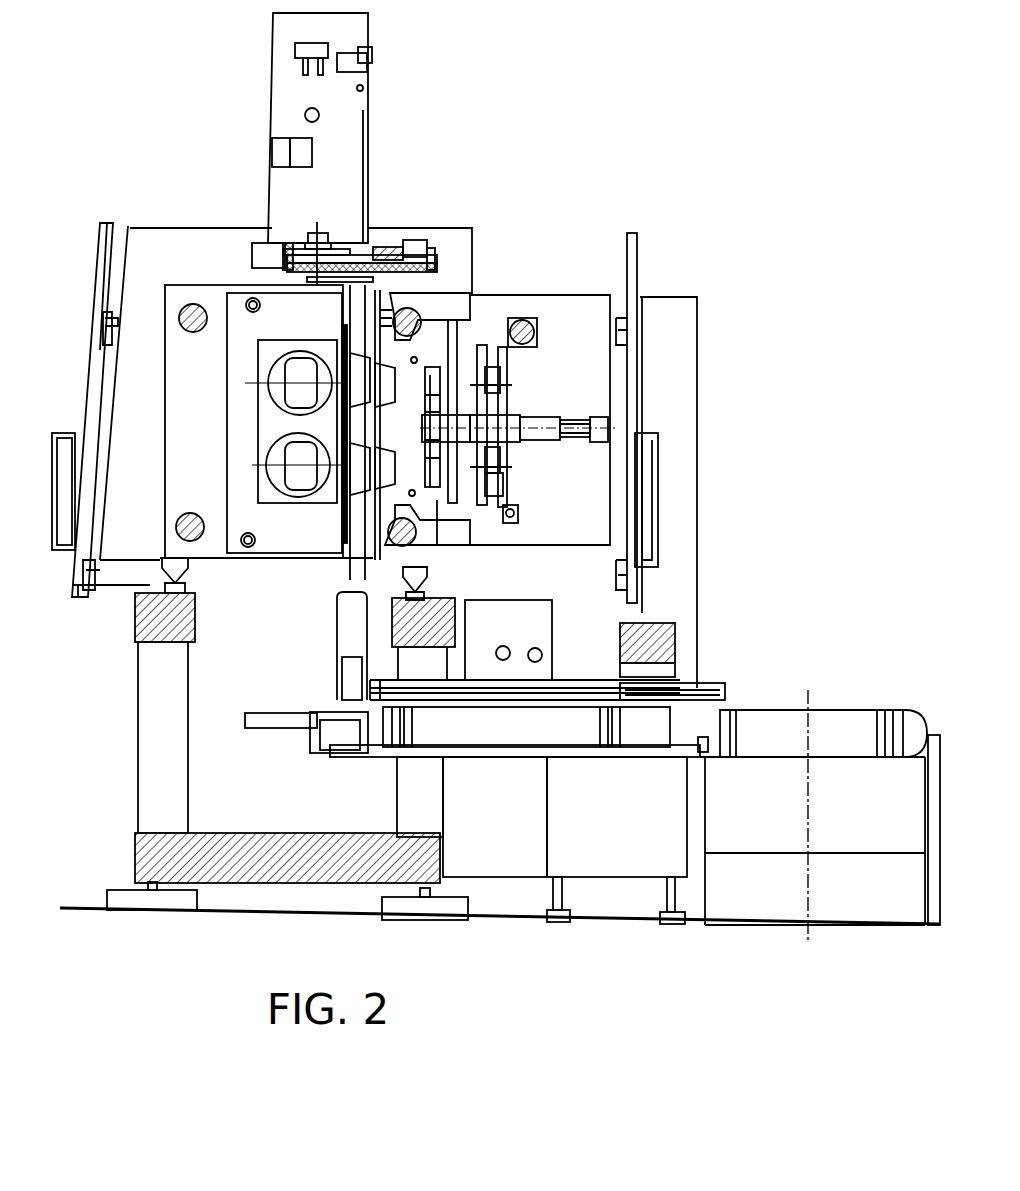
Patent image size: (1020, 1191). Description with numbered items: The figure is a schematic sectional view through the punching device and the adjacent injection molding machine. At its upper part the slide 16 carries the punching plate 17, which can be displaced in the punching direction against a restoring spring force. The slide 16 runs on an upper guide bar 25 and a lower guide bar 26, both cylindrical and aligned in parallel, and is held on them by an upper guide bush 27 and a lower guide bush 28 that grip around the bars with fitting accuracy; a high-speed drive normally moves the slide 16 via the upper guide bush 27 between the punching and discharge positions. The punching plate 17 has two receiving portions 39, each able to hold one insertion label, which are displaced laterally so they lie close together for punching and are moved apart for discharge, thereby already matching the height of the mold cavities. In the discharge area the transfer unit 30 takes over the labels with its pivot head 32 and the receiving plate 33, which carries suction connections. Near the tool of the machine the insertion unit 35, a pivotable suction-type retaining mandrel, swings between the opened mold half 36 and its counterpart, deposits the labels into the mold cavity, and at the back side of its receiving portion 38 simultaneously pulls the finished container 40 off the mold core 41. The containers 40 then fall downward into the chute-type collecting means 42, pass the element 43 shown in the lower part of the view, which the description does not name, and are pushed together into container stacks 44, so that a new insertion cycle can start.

The slide 16 is at (498, 467).
The punching plate 17 is at (487, 380).
The upper guide bar 25 is at (523, 320).
The lower guide bar 26 is at (485, 500).
The upper guide bush 27 is at (627, 233).
The lower guide bush 28 is at (518, 515).
The transfer unit 30 is at (548, 400).
The pivot head 32 is at (438, 392).
The receiving plate 33 is at (435, 300).
The insertion unit 35 is at (372, 240).
The mold half 36 is at (260, 412).
The receiving portion 38 is at (362, 380).
The receiving portions 39 is at (495, 385).
The container 40 is at (368, 383).
The mold core 41 is at (300, 378).
The chute-type collecting means 42 is at (343, 620).
The lower bracket 43 is at (318, 762).
The container stacks 44 is at (503, 735).